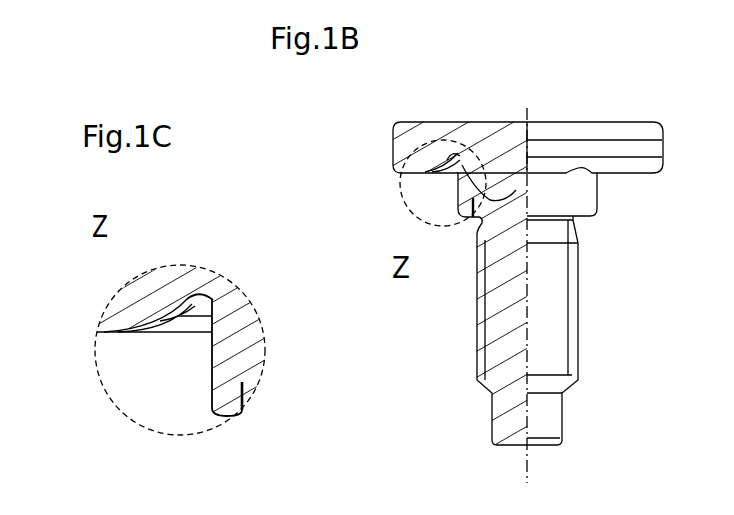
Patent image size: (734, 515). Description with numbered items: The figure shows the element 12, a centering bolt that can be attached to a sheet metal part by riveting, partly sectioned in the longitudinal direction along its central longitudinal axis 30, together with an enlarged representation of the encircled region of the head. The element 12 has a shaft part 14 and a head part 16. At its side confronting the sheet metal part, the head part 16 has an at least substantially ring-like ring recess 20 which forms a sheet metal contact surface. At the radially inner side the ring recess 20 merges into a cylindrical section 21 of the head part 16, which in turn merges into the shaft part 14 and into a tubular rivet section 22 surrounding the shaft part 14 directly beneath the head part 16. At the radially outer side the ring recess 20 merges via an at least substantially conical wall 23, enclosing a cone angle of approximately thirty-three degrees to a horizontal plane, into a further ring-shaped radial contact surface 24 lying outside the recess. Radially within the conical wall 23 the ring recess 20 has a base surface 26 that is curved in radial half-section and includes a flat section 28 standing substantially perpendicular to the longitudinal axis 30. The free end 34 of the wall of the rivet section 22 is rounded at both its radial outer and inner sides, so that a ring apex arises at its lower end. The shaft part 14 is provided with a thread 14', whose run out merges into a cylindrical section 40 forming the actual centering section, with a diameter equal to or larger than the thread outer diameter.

In FIG. 1B, the element 12 is at (612, 274).
In FIG. 1B, the shaft part 14 is at (559, 332).
In FIG. 1B, the thread 14' is at (447, 310).
In FIG. 1B, the head part 16 is at (618, 122).
In FIG. 1B, the ring recess 20 is at (460, 170).
In FIG. 1C, the ring recess 20 is at (208, 297).
In FIG. 1B, the cylindrical section 21 is at (598, 190).
In FIG. 1C, the cylindrical section 21 is at (212, 350).
In FIG. 1B, the tubular rivet section 22 is at (468, 195).
In FIG. 1C, the tubular rivet section 22 is at (223, 387).
In FIG. 1B, the conical wall 23 is at (445, 165).
In FIG. 1C, the conical wall 23 is at (180, 303).
In FIG. 1B, the contact surface 24 is at (412, 175).
In FIG. 1C, the contact surface 24 is at (120, 332).
In FIG. 1C, the base surface 26 is at (192, 297).
In FIG. 1C, the flat section 28 is at (203, 297).
In FIG. 1B, the central longitudinal axis 30 is at (526, 463).
In FIG. 1B, the free end 34 is at (473, 200).
In FIG. 1C, the free end 34 is at (228, 415).
In FIG. 1B, the cylindrical section 40 is at (527, 160).
In FIG. 1C, the cylindrical section 40 is at (243, 393).